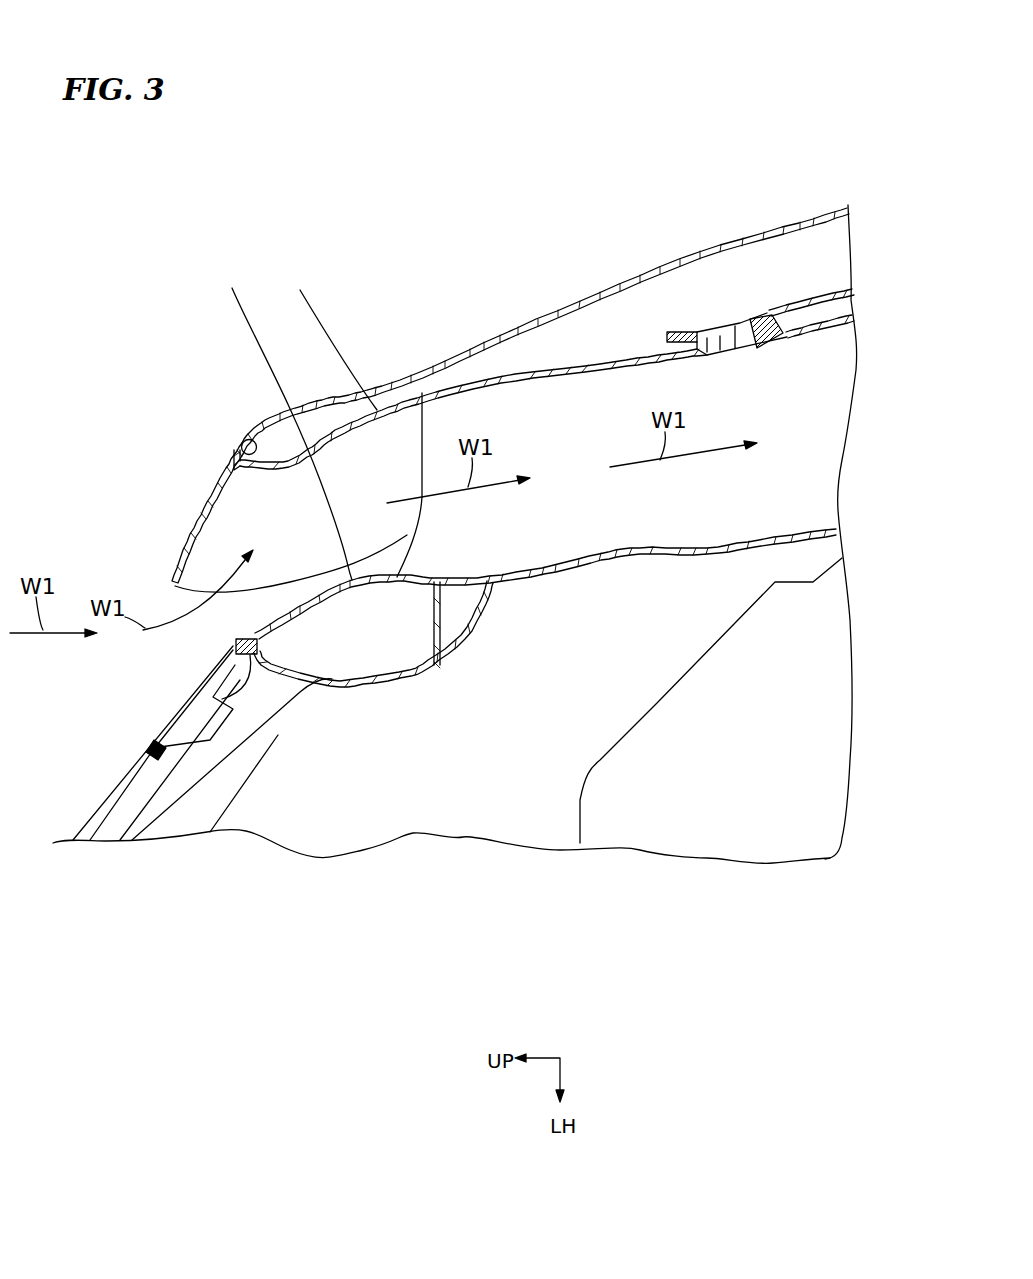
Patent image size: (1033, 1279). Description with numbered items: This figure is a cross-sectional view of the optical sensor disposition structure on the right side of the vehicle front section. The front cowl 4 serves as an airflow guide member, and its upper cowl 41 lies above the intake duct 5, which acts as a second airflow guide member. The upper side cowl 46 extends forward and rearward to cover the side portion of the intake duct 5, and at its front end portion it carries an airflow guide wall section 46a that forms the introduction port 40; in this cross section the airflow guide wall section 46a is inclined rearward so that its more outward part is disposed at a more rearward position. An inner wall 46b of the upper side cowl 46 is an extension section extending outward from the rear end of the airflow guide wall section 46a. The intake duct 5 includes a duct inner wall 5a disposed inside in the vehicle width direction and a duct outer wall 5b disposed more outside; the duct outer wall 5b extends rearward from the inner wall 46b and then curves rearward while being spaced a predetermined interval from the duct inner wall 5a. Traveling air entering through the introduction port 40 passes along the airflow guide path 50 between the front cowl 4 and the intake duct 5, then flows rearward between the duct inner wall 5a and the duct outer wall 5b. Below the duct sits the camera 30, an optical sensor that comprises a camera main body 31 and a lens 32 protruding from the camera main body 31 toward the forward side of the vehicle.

The intake duct 5 is at (317, 262).
The duct inner wall 5a is at (524, 476).
The duct outer wall 5b is at (547, 367).
The upper cowl 41 is at (432, 355).
The front cowl 4 is at (575, 310).
The introduction port 40 is at (172, 588).
The upper side cowl 46 is at (263, 420).
The airflow guide wall section 46a is at (197, 507).
The inner wall 46b is at (247, 440).
The airflow guide path 50 is at (282, 514).
The camera 30 is at (80, 658).
The camera main body 31 is at (213, 694).
The lens 32 is at (233, 645).